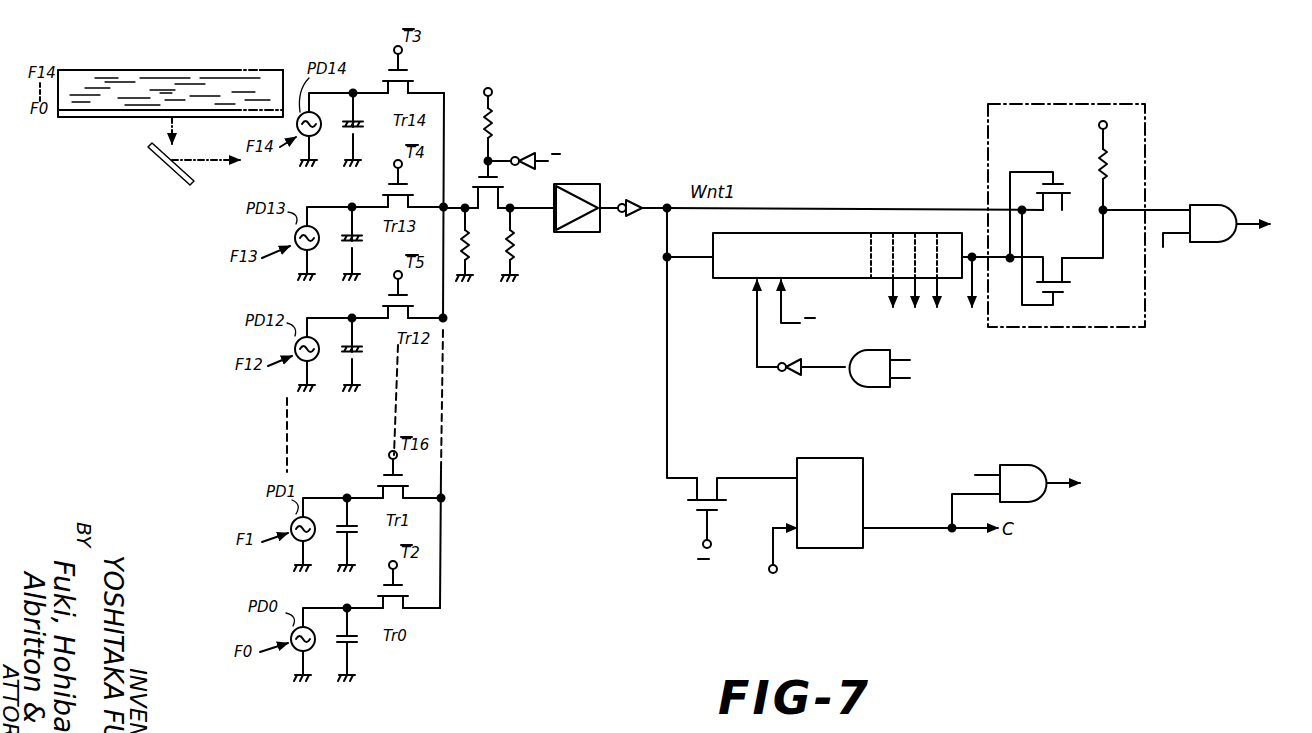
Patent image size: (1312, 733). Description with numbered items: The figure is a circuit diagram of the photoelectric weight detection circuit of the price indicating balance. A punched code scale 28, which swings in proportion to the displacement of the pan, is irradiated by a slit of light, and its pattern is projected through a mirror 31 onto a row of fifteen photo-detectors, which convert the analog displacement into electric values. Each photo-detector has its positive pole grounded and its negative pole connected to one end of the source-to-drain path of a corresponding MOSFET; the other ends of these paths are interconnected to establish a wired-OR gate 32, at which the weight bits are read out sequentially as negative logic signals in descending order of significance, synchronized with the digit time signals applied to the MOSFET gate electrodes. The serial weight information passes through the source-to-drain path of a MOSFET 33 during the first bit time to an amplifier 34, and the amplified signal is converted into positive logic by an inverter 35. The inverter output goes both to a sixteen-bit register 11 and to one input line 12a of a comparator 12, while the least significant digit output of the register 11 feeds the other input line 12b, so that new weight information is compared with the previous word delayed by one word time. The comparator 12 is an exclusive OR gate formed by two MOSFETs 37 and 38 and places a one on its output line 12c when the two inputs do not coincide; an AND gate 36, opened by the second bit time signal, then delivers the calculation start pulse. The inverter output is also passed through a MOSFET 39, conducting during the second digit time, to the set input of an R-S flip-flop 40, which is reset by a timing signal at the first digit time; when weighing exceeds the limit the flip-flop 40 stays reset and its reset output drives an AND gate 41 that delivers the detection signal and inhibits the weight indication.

The code scale 28 is at (276, 71).
The mirror 31 is at (167, 180).
The wired-OR gate 32 is at (446, 205).
The MOSFET 33 is at (512, 176).
The amplifier 34 is at (579, 233).
The inverter 35 is at (646, 201).
The AND gate 36 is at (1208, 206).
The MOSFET 37 is at (1054, 202).
The MOSFET 38 is at (1067, 290).
The MOSFET 39 is at (707, 478).
The R-S type flip-flop 40 is at (840, 462).
The AND gate 41 is at (1036, 470).
The temporary storage register 11 is at (736, 280).
The comparator 12 is at (1138, 121).
The input line 12a is at (966, 208).
The input line 12b is at (978, 263).
The output line 12c is at (1122, 201).